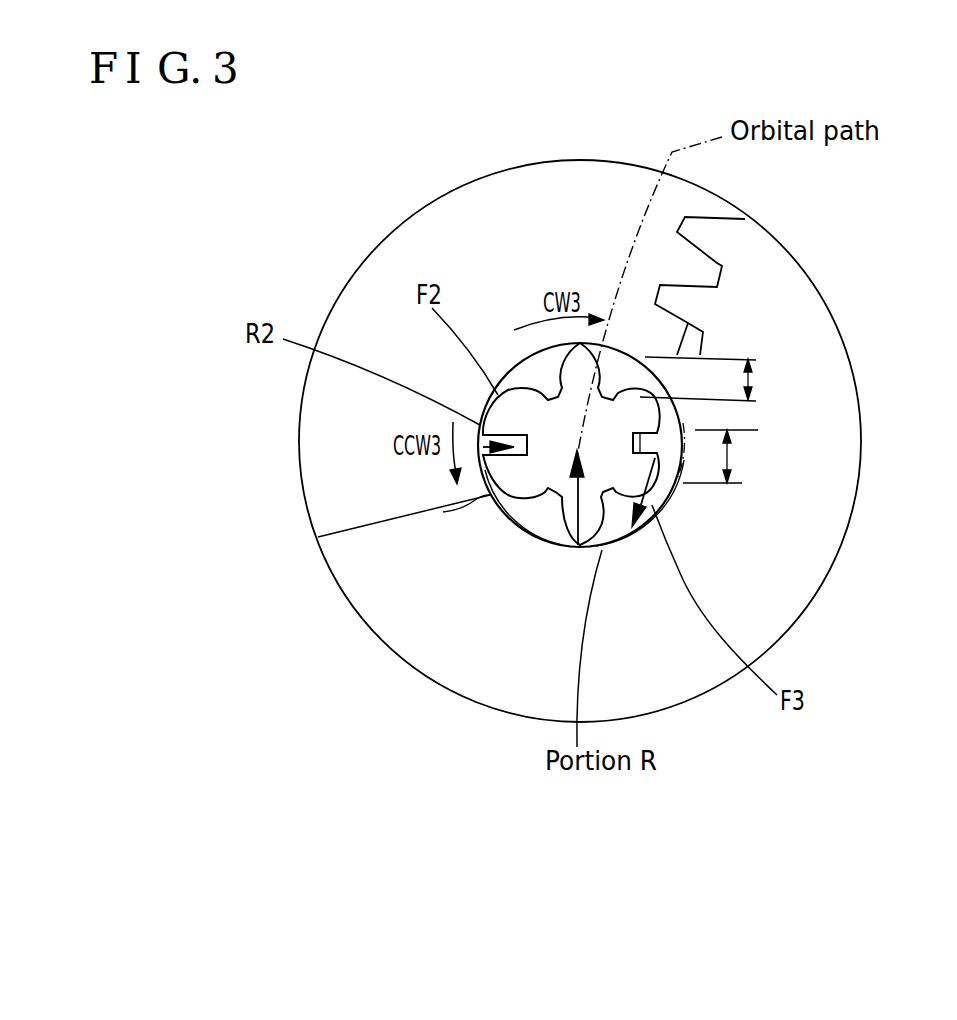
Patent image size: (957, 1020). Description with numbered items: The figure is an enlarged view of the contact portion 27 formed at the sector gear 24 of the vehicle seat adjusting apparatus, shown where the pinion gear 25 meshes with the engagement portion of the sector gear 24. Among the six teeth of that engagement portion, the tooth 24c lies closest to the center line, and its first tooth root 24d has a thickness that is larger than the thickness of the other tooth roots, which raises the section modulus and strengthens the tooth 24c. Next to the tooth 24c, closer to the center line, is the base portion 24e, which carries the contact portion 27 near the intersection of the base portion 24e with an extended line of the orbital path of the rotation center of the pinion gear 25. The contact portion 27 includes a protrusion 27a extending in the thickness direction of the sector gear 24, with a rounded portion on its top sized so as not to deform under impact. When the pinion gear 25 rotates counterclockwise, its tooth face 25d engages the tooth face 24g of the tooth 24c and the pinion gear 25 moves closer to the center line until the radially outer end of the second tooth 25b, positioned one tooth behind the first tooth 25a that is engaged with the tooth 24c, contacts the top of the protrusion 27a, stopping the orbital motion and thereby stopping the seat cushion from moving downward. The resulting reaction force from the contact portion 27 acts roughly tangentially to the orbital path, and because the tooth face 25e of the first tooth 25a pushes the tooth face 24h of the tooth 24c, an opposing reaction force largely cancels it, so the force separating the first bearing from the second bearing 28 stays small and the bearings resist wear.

The sector gear 24 is at (736, 403).
The tooth 24c is at (658, 428).
The first tooth root 24d is at (713, 455).
The base portion 24e is at (562, 570).
The tooth face 24g is at (643, 390).
The tooth face 24h is at (640, 490).
The pinion gear 25 is at (535, 445).
The first tooth 25a is at (657, 455).
The second tooth 25b is at (580, 511).
The tooth face 25d is at (662, 425).
The tooth face 25e is at (681, 450).
The contact portion 27 is at (623, 490).
The protrusion 27a is at (580, 512).
The second bearing 28 is at (497, 410).